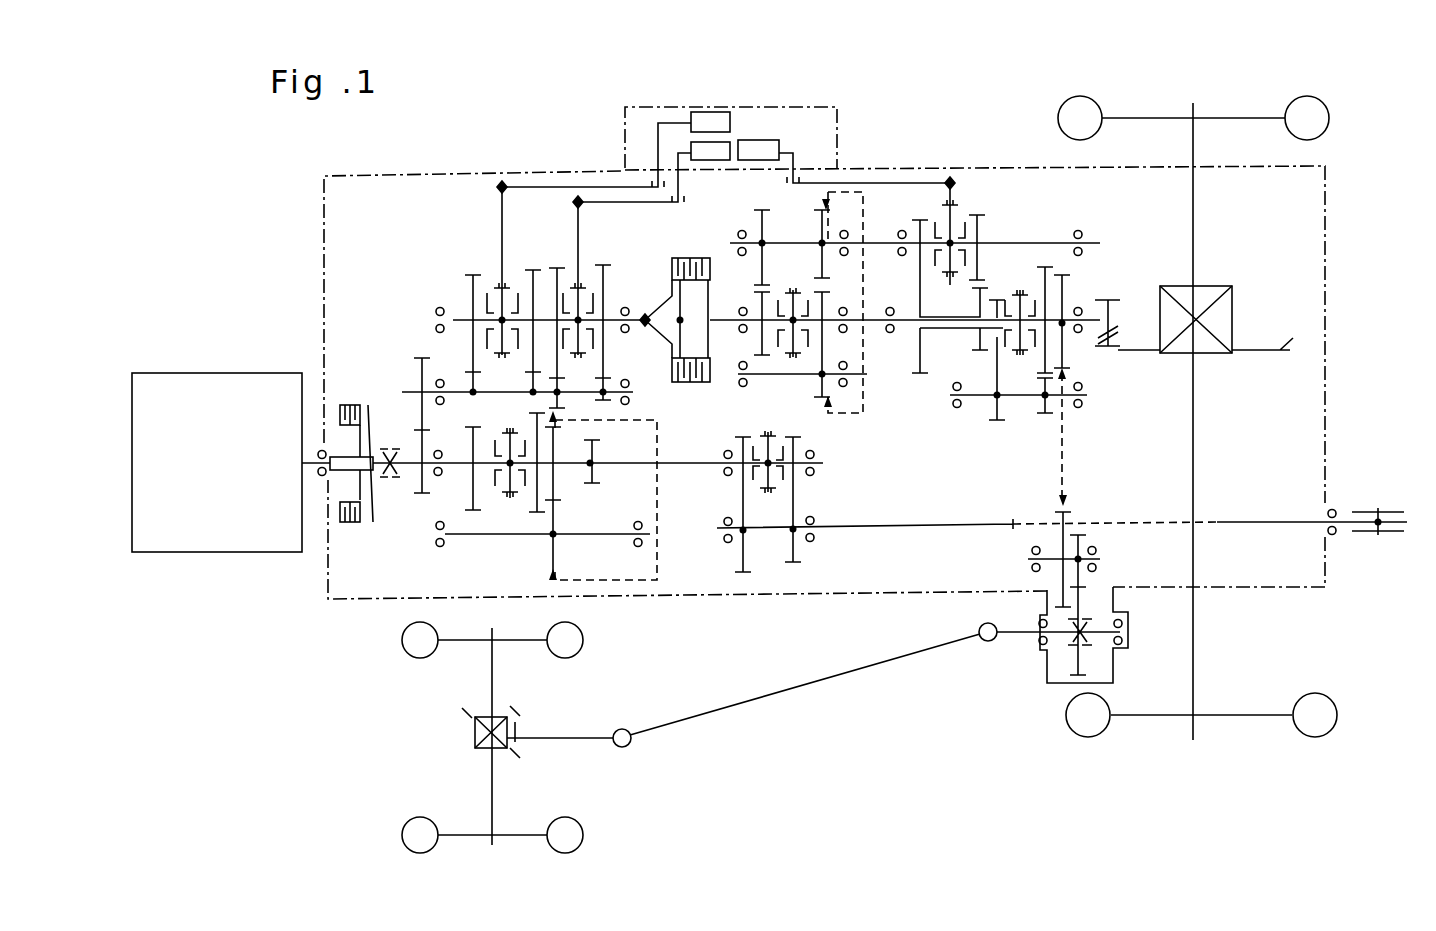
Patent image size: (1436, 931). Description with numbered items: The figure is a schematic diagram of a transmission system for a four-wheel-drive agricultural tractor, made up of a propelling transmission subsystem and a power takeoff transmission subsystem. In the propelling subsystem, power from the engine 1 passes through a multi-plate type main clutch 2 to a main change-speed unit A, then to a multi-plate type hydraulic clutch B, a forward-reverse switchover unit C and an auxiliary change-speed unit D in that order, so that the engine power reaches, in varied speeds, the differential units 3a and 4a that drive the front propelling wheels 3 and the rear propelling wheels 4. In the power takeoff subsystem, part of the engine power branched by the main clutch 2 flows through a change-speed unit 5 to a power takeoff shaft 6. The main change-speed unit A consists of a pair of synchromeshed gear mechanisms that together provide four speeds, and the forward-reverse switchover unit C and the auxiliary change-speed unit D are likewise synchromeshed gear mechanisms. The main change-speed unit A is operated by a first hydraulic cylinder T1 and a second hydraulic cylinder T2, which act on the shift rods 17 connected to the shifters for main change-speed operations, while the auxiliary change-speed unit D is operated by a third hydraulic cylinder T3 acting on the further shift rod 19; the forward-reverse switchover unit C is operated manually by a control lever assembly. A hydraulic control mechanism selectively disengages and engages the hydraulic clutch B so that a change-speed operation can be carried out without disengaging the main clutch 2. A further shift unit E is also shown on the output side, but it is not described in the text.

The engine 1 is at (220, 373).
The main clutch 2 is at (352, 400).
The front propelling wheels 3 is at (630, 796).
The differential unit 3a is at (475, 737).
The rear propelling wheels 4 is at (1308, 738).
The differential unit 4a is at (1235, 288).
The change-speed unit 5 is at (512, 507).
The power takeoff shaft 6 is at (1390, 510).
The shift rods 17 is at (610, 202).
The shift rod 19 is at (885, 183).
The main change-speed unit A is at (480, 262).
The hydraulic clutch B is at (672, 256).
The forward-reverse switchover unit C is at (774, 383).
The auxiliary change-speed unit D is at (990, 219).
The gear shift unit E is at (1022, 278).
The first hydraulic cylinder T1 is at (712, 162).
The second hydraulic cylinder T2 is at (703, 112).
The third hydraulic cylinder T3 is at (765, 140).